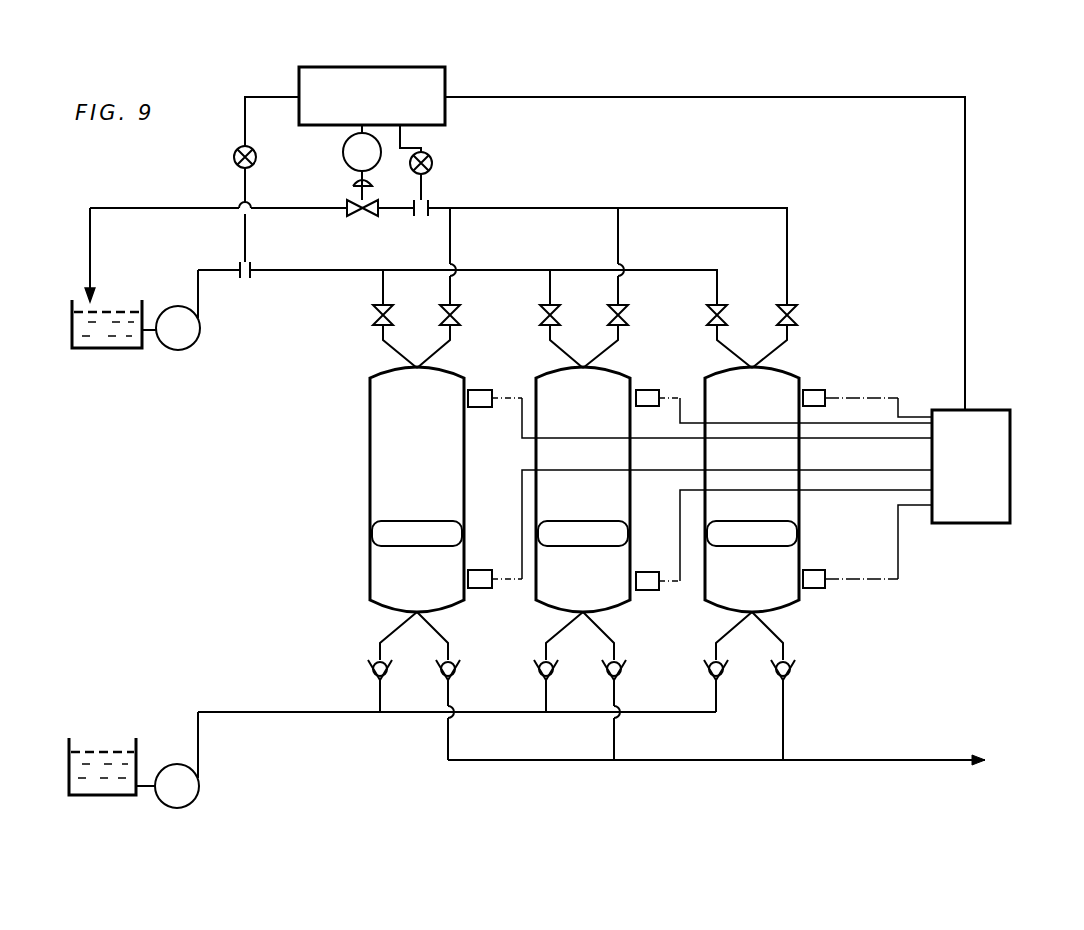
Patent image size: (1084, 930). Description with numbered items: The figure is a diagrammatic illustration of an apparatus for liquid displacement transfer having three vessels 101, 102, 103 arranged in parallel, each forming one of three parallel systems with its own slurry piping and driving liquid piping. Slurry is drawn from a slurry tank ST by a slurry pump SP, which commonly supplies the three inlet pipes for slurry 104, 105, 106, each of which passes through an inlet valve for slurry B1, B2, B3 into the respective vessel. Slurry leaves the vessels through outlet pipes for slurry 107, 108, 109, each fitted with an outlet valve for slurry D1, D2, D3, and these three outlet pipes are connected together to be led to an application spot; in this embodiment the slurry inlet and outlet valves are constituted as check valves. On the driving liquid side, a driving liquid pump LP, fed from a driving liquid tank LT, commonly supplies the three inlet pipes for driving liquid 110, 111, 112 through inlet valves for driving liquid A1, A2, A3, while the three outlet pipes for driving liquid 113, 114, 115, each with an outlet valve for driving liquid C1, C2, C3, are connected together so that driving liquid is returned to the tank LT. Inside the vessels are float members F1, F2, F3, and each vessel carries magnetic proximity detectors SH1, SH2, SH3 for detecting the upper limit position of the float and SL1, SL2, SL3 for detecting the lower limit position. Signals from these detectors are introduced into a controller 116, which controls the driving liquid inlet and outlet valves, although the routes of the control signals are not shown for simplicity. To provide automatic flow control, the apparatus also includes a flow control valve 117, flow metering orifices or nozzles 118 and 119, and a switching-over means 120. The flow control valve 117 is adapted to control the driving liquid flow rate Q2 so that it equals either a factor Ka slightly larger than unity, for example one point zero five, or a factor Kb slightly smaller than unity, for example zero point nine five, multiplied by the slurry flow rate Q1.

The vessel 101 is at (386, 489).
The vessel 102 is at (551, 489).
The vessel 103 is at (722, 489).
The inlet pipe for slurry 104 is at (378, 648).
The inlet pipe for slurry 105 is at (544, 648).
The inlet pipe for slurry 106 is at (714, 648).
The outlet pipe for slurry 107 is at (442, 630).
The outlet pipe for slurry 108 is at (608, 630).
The outlet pipe for slurry 109 is at (778, 630).
The inlet pipe for driving liquid 110 is at (384, 343).
The inlet pipe for driving liquid 111 is at (550, 343).
The inlet pipe for driving liquid 112 is at (720, 343).
The outlet pipe for driving liquid 113 is at (440, 344).
The outlet pipe for driving liquid 114 is at (607, 344).
The outlet pipe for driving liquid 115 is at (777, 344).
The controller 116 is at (1010, 438).
The flow control valve 117 is at (356, 214).
The flow metering orifice or nozzle 118 is at (243, 279).
The flow metering orifice or nozzle 119 is at (428, 206).
The switching-over means 120 is at (448, 91).
The inlet valve for driving liquid A1 is at (372, 312).
The inlet valve for driving liquid A2 is at (540, 313).
The inlet valve for driving liquid A3 is at (707, 313).
The outlet valve for driving liquid C1 is at (441, 312).
The outlet valve for driving liquid C2 is at (609, 313).
The outlet valve for driving liquid C3 is at (777, 313).
The inlet valve for slurry B1 is at (372, 676).
The inlet valve for slurry B2 is at (538, 676).
The inlet valve for slurry B3 is at (708, 676).
The outlet valve for slurry D1 is at (456, 676).
The outlet valve for slurry D2 is at (622, 676).
The outlet valve for slurry D3 is at (792, 676).
The float member F1 is at (417, 533).
The float member F2 is at (583, 533).
The float member F3 is at (752, 533).
The magnetic proximity detector SH1 is at (480, 408).
The magnetic proximity detector SH2 is at (648, 406).
The magnetic proximity detector SH3 is at (816, 390).
The magnetic proximity detector SL1 is at (484, 564).
The magnetic proximity detector SL2 is at (652, 566).
The magnetic proximity detector SL3 is at (820, 564).
The driving liquid pump LP is at (178, 328).
The driving liquid tank LT is at (128, 349).
The slurry pump SP is at (177, 786).
The slurry tank ST is at (136, 756).
The flow rate Q1 is at (372, 270).
The flow rate Q2 is at (507, 212).